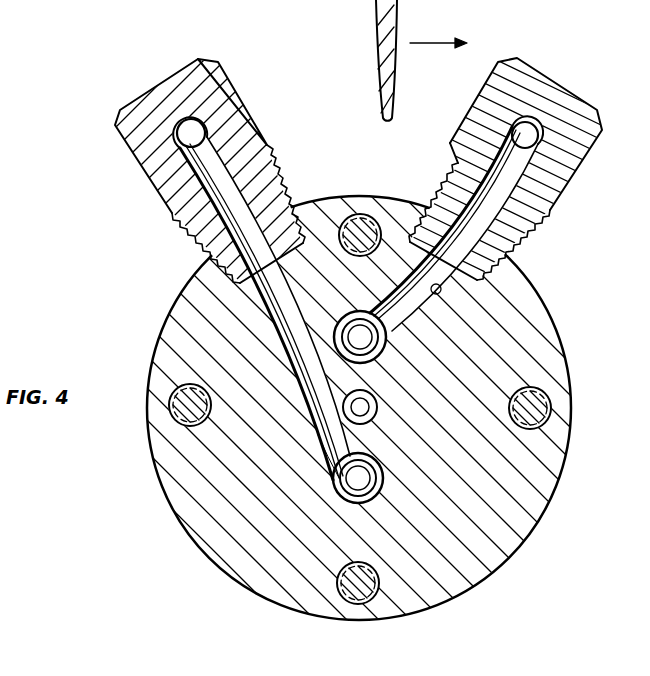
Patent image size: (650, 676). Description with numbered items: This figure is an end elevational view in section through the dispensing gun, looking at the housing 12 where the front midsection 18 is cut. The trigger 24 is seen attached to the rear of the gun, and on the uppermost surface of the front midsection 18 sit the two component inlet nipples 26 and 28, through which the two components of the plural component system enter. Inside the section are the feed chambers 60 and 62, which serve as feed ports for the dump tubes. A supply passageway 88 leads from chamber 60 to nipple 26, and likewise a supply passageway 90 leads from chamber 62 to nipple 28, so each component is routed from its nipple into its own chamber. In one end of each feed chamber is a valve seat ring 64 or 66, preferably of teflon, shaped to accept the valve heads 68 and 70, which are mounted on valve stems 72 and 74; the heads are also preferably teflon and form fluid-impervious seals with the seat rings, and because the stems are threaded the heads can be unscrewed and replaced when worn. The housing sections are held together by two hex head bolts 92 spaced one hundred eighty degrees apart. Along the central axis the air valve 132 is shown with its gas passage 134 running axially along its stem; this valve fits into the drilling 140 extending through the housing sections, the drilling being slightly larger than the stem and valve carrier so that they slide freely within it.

The housing 12 is at (540, 281).
The front midsection 18 is at (547, 351).
The trigger 24 is at (380, 76).
The component inlet nipple 26 is at (208, 68).
The component inlet nipple 28 is at (525, 73).
The feed chamber 60 is at (386, 336).
The feed chamber 62 is at (385, 473).
The valve seat ring 64 is at (352, 312).
The valve seat ring 66 is at (352, 500).
The valve head 68 is at (366, 357).
The valve head 70 is at (375, 458).
The valve stem 72 is at (322, 352).
The valve stem 74 is at (375, 494).
The supply passageway 88 is at (441, 292).
The supply passageway 90 is at (272, 310).
The hex head bolts 92 is at (368, 221).
The air valve 132 is at (375, 426).
The gas passage 134 is at (378, 397).
The drilling 140 is at (336, 462).